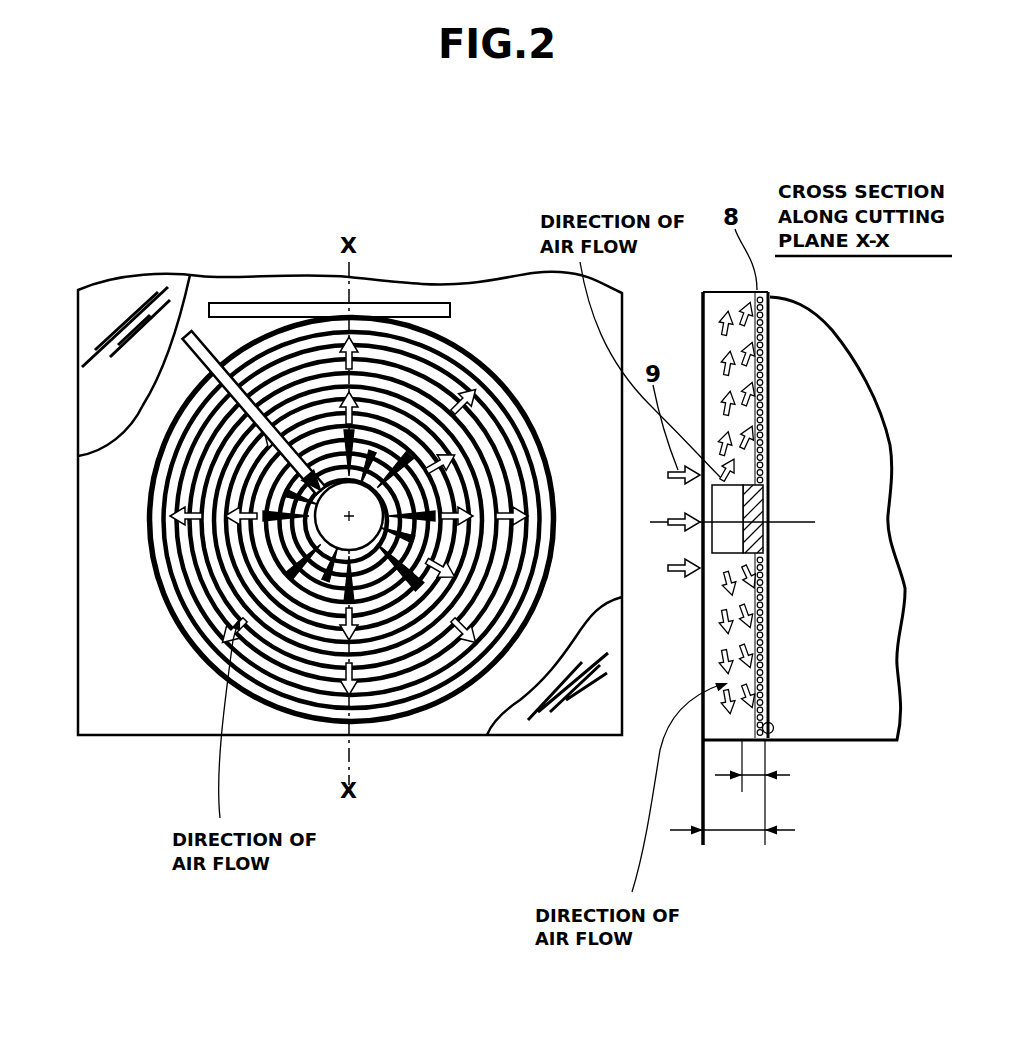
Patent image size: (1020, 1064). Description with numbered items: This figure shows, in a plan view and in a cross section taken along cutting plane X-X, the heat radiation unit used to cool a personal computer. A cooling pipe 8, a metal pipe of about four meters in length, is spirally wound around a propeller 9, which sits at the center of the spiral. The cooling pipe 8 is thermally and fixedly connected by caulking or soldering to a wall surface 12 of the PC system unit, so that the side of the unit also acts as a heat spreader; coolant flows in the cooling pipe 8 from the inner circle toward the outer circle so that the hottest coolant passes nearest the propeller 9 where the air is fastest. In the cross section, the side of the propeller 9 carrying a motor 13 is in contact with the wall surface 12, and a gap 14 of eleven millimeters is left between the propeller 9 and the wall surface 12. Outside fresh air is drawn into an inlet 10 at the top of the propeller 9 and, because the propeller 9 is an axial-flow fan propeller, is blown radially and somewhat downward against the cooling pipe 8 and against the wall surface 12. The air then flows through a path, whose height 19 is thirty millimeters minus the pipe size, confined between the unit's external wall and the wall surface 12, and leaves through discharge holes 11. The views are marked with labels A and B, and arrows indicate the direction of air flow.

The cooling pipe 8 is at (415, 325).
The propeller 9 is at (472, 405).
The inlet 10 is at (692, 489).
The discharge holes 11 is at (745, 325).
The wall surface 12 is at (778, 700).
The motor 13 is at (768, 500).
The gap 14 is at (770, 778).
The height 19 is at (733, 832).
The heat sink body A is at (845, 395).
The housing cover B is at (703, 740).